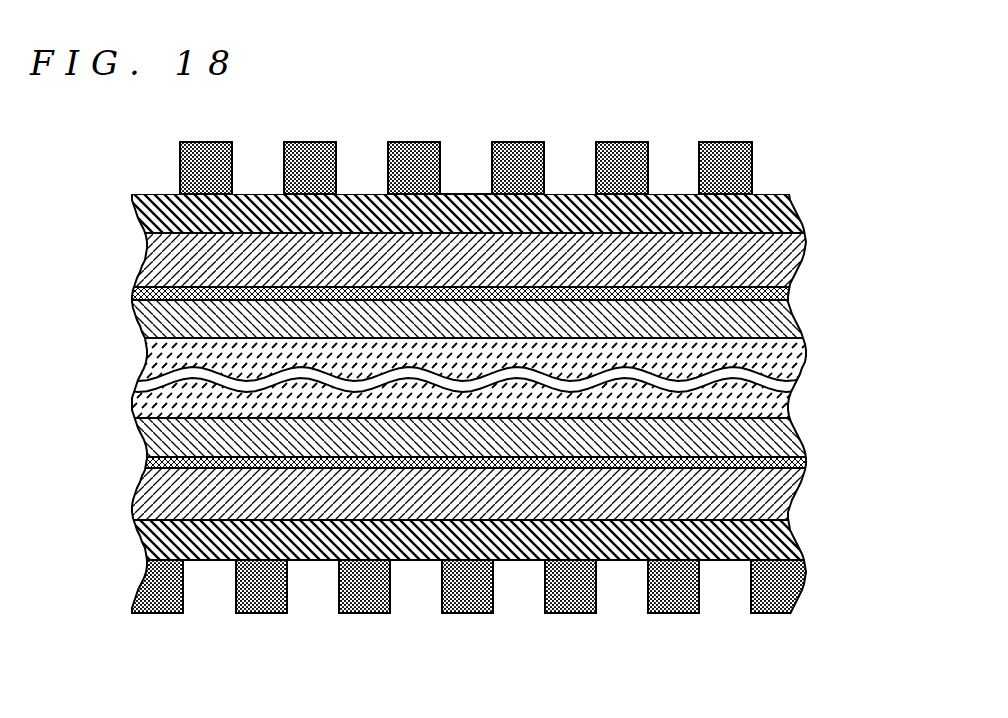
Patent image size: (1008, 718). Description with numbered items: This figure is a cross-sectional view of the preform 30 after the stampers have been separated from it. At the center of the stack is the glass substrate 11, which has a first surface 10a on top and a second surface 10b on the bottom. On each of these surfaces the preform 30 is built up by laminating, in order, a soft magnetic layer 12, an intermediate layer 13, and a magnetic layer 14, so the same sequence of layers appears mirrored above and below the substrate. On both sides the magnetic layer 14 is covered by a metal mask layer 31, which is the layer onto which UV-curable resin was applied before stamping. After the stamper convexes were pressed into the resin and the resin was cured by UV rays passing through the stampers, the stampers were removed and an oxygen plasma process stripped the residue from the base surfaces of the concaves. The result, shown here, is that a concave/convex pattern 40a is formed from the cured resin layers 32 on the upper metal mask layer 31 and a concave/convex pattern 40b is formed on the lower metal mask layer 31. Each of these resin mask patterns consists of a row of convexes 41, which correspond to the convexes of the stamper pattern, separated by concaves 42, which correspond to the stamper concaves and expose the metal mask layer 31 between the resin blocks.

The first surface 10a is at (141, 186).
The second surface 10b is at (143, 578).
The glass substrate 11 is at (787, 392).
The soft magnetic layer 12 is at (793, 318).
The intermediate layer 13 is at (790, 291).
The magnetic layer 14 is at (793, 262).
The preform 30 is at (117, 196).
The metal mask layer 31 is at (790, 215).
The resin layer 32 is at (752, 171).
The concave/convex pattern 40a is at (610, 131).
The concave/convex pattern 40b is at (380, 623).
The convex 41 is at (415, 158).
The concave 42 is at (467, 168).